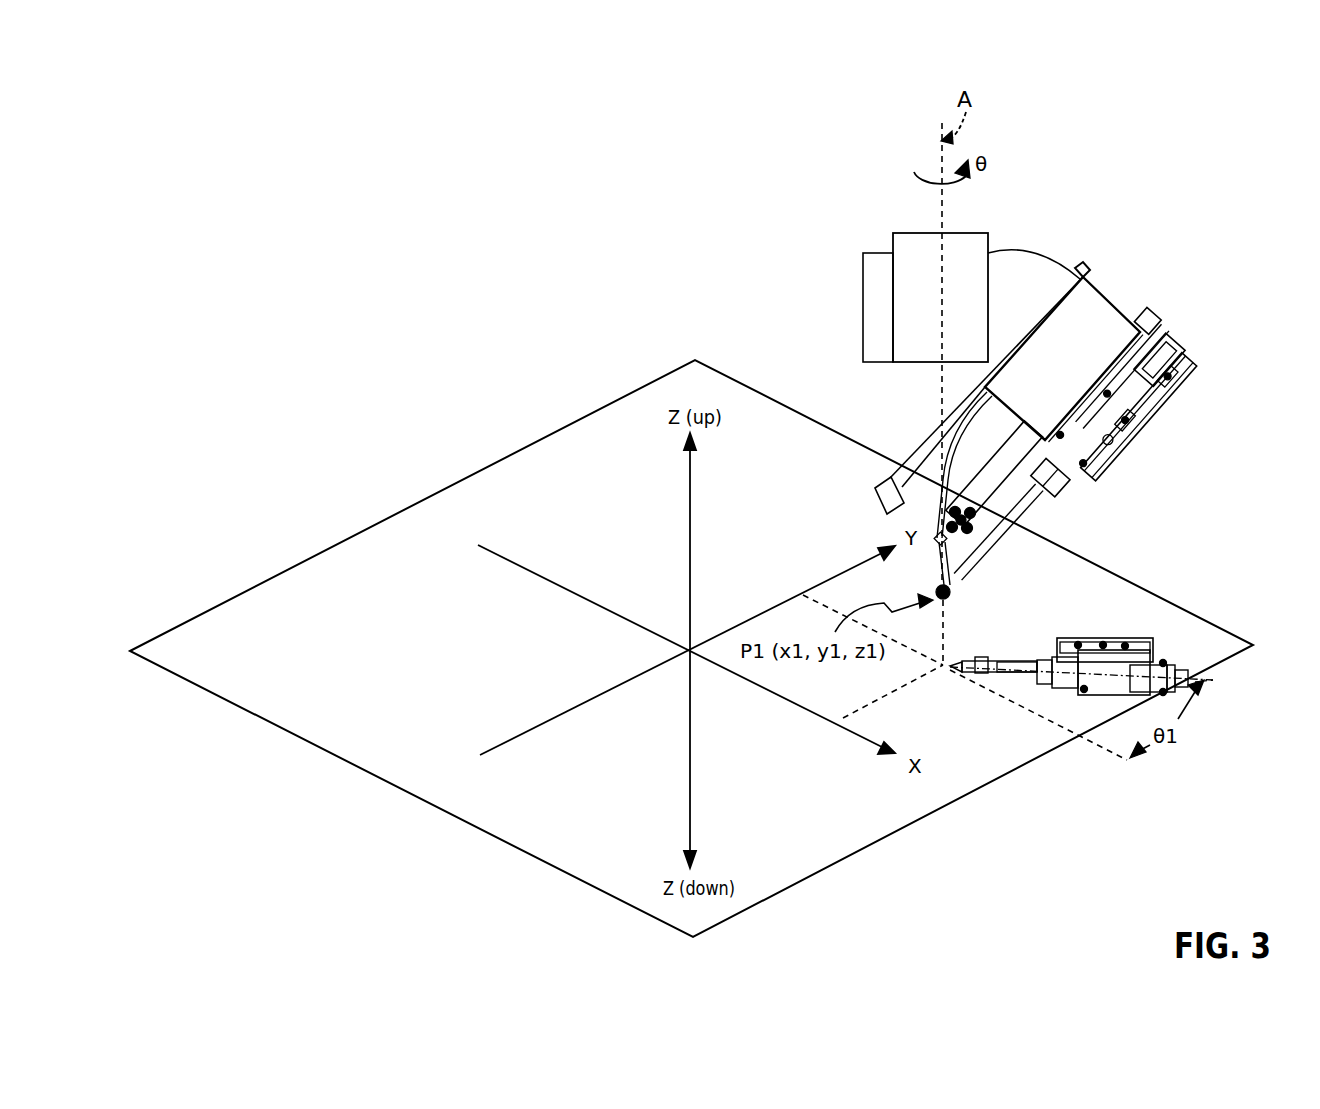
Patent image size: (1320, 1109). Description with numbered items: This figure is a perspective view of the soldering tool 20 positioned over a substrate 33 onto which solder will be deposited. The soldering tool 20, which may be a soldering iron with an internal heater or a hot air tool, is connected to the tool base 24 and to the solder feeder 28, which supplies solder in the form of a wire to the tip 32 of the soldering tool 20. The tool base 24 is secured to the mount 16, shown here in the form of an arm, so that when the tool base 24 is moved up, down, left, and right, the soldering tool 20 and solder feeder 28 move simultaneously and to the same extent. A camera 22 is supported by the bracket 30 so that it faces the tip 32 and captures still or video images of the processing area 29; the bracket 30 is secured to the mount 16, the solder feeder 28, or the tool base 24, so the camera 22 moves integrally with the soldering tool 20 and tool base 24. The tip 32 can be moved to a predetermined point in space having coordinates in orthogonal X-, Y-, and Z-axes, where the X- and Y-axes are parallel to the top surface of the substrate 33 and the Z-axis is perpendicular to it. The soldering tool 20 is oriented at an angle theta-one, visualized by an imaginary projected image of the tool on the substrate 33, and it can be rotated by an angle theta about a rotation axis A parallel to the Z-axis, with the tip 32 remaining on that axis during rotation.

The mount 16 is at (972, 233).
The solder feeder 28 is at (1100, 328).
The bracket 30 is at (918, 445).
The camera 22 is at (875, 497).
The tool base 24 is at (1147, 420).
The soldering tool 20 is at (1050, 512).
The tip 32 is at (950, 588).
The substrate 33 is at (822, 873).
The processing area 29 is at (946, 692).